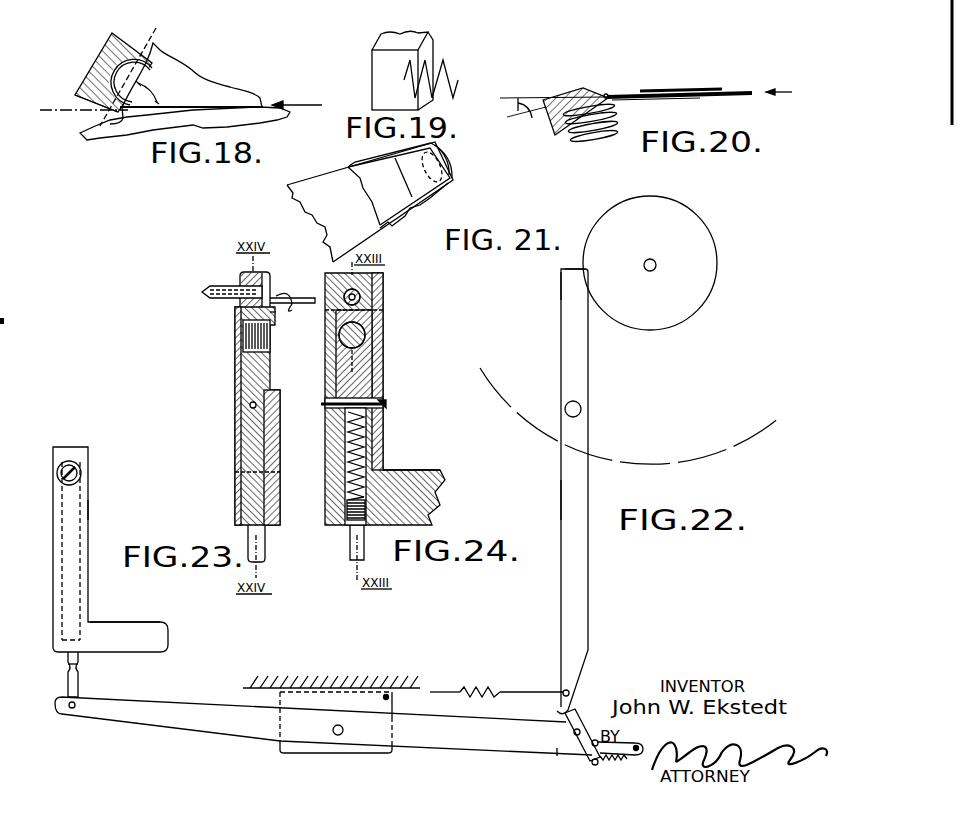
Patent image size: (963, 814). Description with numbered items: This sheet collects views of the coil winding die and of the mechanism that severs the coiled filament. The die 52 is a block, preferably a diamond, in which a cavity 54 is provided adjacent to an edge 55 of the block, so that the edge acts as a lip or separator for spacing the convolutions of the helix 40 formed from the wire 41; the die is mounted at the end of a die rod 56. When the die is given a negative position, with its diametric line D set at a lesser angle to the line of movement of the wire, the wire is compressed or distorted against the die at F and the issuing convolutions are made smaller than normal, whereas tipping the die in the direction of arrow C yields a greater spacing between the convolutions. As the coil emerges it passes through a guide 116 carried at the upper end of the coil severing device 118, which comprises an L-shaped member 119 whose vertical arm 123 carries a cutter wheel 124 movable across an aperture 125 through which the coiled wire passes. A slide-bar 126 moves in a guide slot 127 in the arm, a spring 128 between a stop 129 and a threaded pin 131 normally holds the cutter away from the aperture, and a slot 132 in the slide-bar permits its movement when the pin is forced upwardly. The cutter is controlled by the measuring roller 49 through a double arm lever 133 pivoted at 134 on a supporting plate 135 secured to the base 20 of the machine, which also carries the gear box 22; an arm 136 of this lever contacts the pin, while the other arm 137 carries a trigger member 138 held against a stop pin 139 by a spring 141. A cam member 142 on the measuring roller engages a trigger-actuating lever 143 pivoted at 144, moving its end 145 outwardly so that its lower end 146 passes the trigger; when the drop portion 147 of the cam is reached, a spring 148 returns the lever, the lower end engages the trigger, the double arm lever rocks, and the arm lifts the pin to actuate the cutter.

In FIG. 22, the base 20 is at (382, 688).
In FIG. 22, the gear box 22 is at (73, 461).
In FIG. 19, the helix 40 is at (455, 92).
In FIG. 23, the helix 40 is at (289, 329).
In FIG. 18, the wire 41 is at (250, 106).
In FIG. 22, the measuring roller 49 is at (733, 447).
In FIG. 21, the die 52 is at (444, 186).
In FIG. 21, the cavity 54 is at (442, 170).
In FIG. 20, the edge (lip) 55 is at (582, 88).
In FIG. 21, the edge (lip) 55 is at (444, 148).
In FIG. 21, the die rod 56 is at (289, 187).
In FIG. 23, the guide 116 is at (217, 300).
In FIG. 23, the coil severing device 118 is at (232, 437).
In FIG. 24, the coil severing device 118 is at (398, 343).
In FIG. 22, the coil severing device 118 is at (91, 510).
In FIG. 24, the L-shaped member 119 is at (400, 470).
In FIG. 22, the L-shaped member 119 is at (90, 620).
In FIG. 24, the vertical arm 123 is at (384, 303).
In FIG. 22, the vertical arm 123 is at (52, 562).
In FIG. 23, the cutter wheel 124 is at (272, 358).
In FIG. 23, the aperture 125 is at (262, 322).
In FIG. 23, the slide-bar 126 is at (246, 450).
In FIG. 23, the guide slot 127 is at (242, 396).
In FIG. 24, the spring 128 is at (342, 460).
In FIG. 24, the stop 129 is at (382, 403).
In FIG. 24, the threaded pin 131 is at (356, 524).
In FIG. 22, the threaded pin 131 is at (80, 661).
In FIG. 24, the slot 132 is at (332, 400).
In FIG. 22, the double arm lever 133 is at (342, 742).
In FIG. 22, the pivot 134 is at (345, 732).
In FIG. 22, the supporting plate 135 is at (281, 756).
In FIG. 22, the arm 136 is at (150, 720).
In FIG. 22, the arm 137 is at (552, 763).
In FIG. 22, the trigger member 138 is at (582, 714).
In FIG. 22, the stop pin 139 is at (590, 764).
In FIG. 22, the spring 141 is at (617, 755).
In FIG. 22, the cam member 142 is at (710, 302).
In FIG. 22, the trigger-actuating lever 143 is at (580, 498).
In FIG. 22, the pivot 144 is at (581, 412).
In FIG. 22, the end 145 is at (565, 278).
In FIG. 22, the lower end 146 is at (563, 715).
In FIG. 22, the drop portion (depression) 147 is at (584, 268).
In FIG. 22, the spring 148 is at (588, 360).
In FIG. 20, the arrow C is at (526, 118).
In FIG. 18, the diametric line D is at (159, 30).
In FIG. 18, the compression point F is at (107, 120).